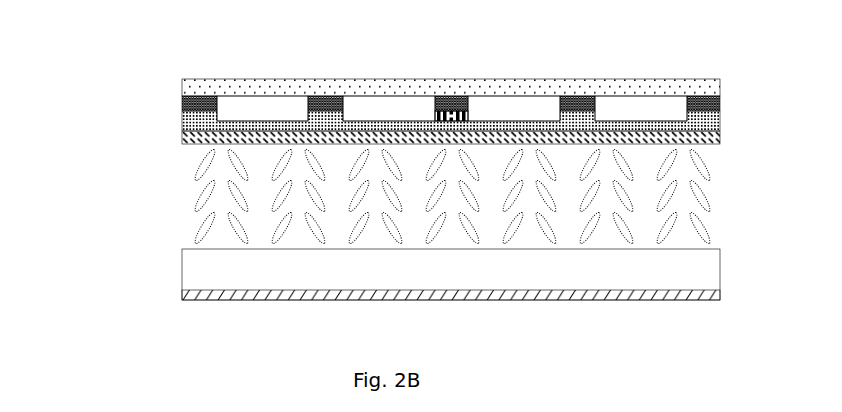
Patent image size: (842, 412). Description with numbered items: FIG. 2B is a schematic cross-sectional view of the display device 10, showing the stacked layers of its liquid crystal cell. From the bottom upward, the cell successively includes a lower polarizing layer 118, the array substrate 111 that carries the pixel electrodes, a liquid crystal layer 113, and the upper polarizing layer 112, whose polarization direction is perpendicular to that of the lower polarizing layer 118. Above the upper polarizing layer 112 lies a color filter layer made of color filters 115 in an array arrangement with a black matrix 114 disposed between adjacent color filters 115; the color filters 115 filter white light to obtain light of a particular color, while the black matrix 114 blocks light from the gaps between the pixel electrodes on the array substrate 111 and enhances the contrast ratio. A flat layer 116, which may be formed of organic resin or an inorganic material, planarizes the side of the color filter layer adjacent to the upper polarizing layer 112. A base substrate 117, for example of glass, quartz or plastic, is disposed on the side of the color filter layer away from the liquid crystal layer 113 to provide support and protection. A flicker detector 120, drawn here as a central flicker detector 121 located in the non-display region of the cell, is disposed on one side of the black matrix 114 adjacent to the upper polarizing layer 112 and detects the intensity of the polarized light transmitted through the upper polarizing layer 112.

The display device 10 is at (697, 50).
The array substrate 111 is at (182, 268).
The upper polarizing layer 112 is at (182, 137).
The liquid crystal layer 113 is at (195, 242).
The black matrix 114 is at (182, 103).
The color filter 115 is at (262, 109).
The flat layer 116 is at (182, 128).
The base substrate 117 is at (182, 87).
The lower polarizing layer 118 is at (182, 294).
The flicker detector 120 is at (451, 116).
The central flicker detector 121 is at (446, 96).